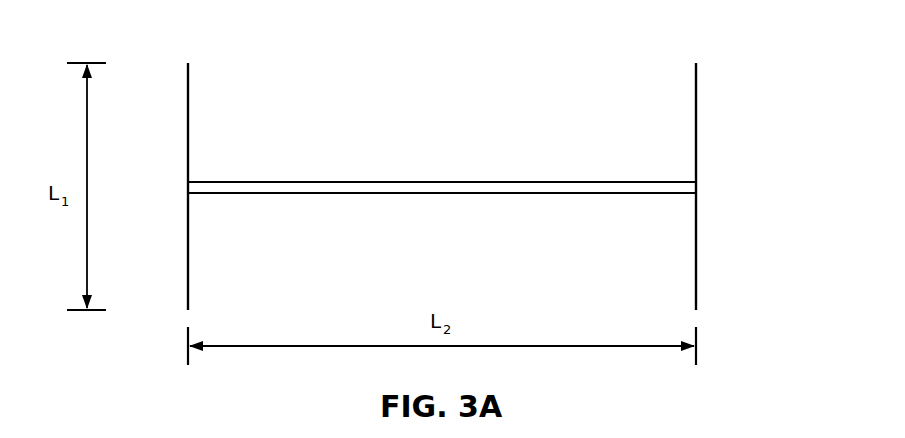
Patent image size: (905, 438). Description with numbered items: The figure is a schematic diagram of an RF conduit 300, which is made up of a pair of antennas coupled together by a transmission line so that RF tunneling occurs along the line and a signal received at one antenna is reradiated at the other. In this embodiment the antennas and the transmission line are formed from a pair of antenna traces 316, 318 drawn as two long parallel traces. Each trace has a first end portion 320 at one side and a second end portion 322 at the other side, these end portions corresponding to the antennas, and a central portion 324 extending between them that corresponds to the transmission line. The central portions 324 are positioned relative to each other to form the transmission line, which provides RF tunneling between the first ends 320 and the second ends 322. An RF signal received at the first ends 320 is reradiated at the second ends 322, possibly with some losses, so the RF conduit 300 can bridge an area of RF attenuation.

The RF conduit 300 is at (297, 136).
The antenna trace 316 is at (397, 181).
The antenna trace 318 is at (323, 194).
The first end portion 320 is at (727, 218).
The second end portion 322 is at (175, 261).
The central portion 324 is at (531, 173).